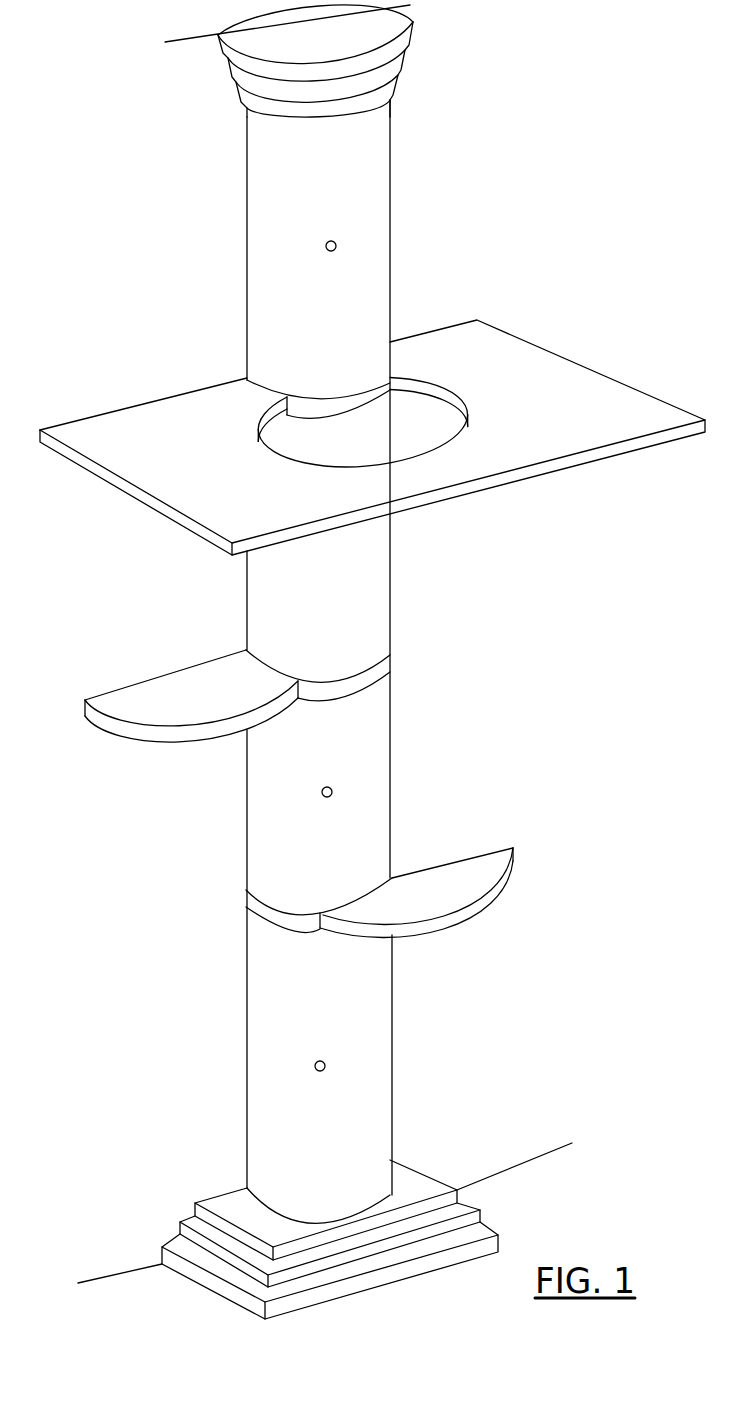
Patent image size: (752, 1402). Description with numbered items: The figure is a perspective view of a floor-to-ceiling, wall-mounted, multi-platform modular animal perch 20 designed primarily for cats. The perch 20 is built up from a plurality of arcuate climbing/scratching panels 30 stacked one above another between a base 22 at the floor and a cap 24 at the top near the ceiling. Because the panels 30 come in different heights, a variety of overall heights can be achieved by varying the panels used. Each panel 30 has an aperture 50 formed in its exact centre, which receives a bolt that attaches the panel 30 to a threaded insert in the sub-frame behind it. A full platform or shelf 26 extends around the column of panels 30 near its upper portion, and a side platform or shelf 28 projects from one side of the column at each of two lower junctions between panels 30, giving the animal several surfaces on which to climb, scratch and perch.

The modular animal perch 20 is at (372, 662).
The base 22 is at (437, 1188).
The cap 24 is at (400, 46).
The full platform or shelf 26 is at (610, 390).
The side platform or shelf 28 is at (150, 688).
The climbing/scratching panel 30 is at (388, 183).
The aperture 50 is at (336, 248).